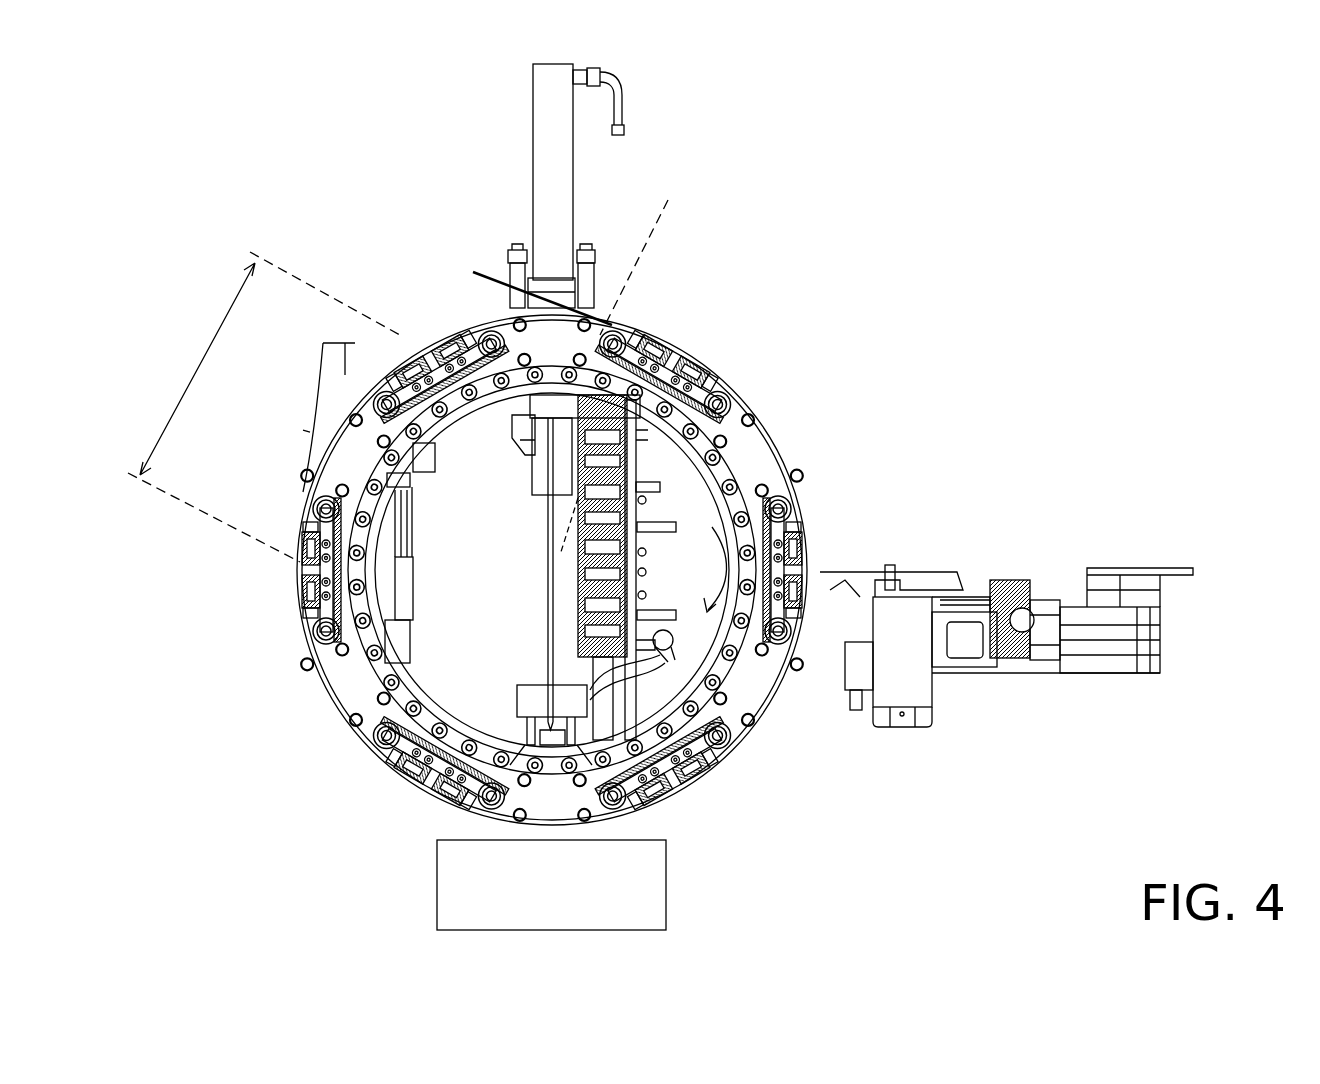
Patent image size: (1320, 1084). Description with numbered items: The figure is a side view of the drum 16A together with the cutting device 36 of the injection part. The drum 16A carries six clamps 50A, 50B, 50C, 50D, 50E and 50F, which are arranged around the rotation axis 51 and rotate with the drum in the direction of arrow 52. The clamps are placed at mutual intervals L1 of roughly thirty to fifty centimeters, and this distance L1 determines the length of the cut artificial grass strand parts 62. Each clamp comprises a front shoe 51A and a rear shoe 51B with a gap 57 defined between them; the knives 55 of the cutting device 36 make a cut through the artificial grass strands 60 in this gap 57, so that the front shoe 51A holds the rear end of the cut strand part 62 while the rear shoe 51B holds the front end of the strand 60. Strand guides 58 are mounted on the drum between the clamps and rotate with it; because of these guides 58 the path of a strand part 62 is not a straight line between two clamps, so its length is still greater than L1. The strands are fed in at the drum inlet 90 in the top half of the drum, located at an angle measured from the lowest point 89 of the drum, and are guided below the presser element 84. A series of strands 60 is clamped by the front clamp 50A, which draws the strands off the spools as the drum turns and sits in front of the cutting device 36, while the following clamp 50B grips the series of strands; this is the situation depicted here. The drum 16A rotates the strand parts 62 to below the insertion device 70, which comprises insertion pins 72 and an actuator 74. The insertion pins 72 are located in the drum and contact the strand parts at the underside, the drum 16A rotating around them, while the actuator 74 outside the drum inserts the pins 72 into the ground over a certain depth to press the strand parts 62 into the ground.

The drum 16A is at (785, 440).
The cutting device 36 is at (940, 578).
The front clamp 50A is at (806, 572).
The following clamp 50B is at (682, 360).
The clamp 50C is at (425, 356).
The clamp 50D is at (300, 572).
The clamp 50E is at (415, 790).
The clamp 50F is at (690, 790).
The rotation axis 51 is at (548, 576).
The front shoe 51A is at (445, 356).
The rear shoe 51B is at (640, 352).
The arrow 52 is at (722, 570).
The knives 55 is at (850, 582).
The gap 57 is at (430, 356).
The strand guides 58 is at (483, 334).
The artificial grass strand 60 is at (478, 272).
The artificial grass strand part 62 is at (772, 442).
The insertion device 70 is at (603, 580).
The insertion pins 72 is at (548, 642).
The actuator 74 is at (535, 150).
The presser element 84 is at (608, 272).
The lowest point 89 is at (552, 824).
The drum inlet 90 is at (548, 300).
The mutual interval L1 is at (195, 372).